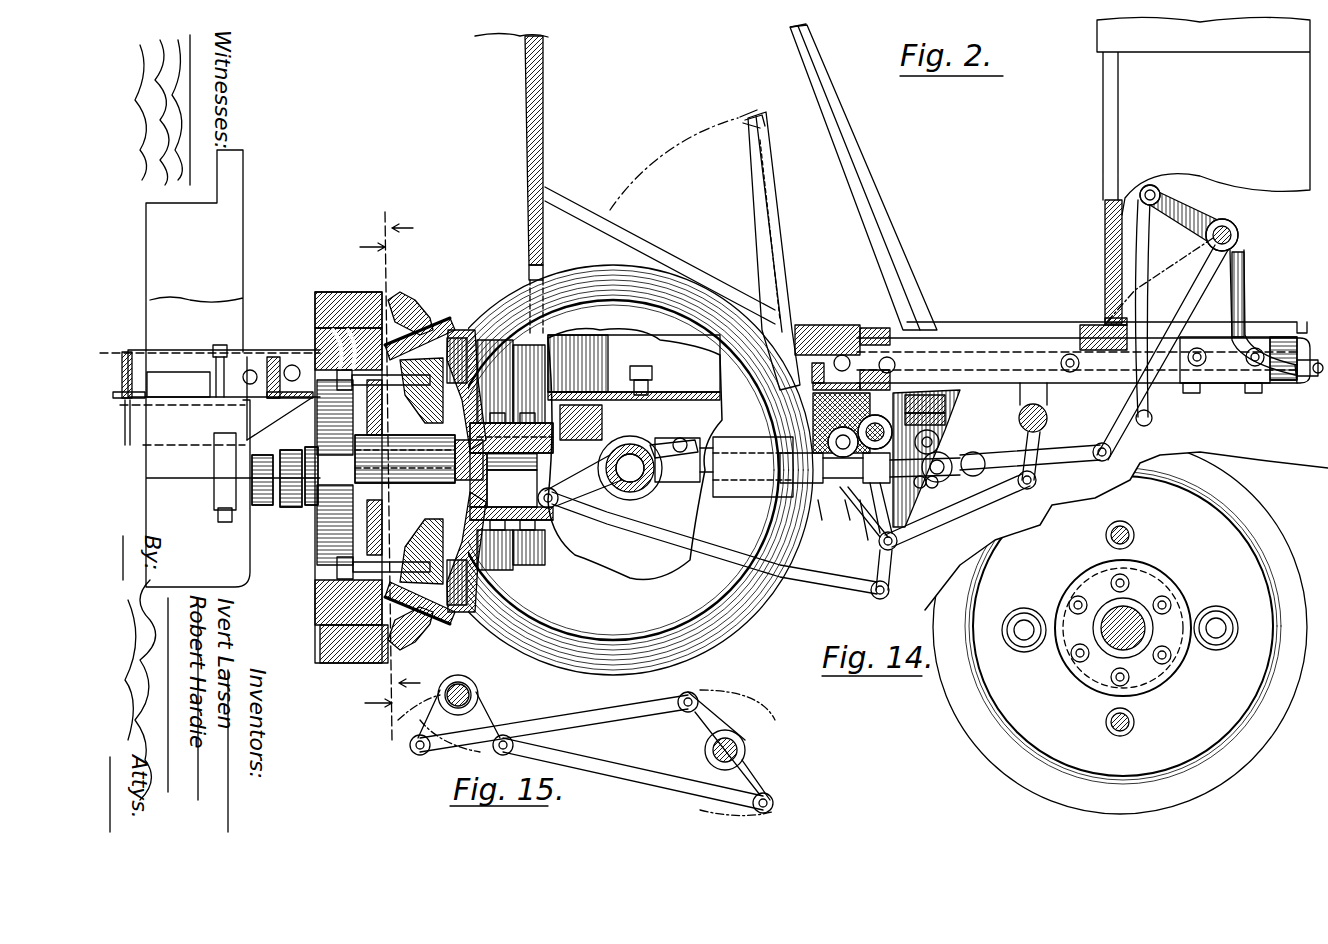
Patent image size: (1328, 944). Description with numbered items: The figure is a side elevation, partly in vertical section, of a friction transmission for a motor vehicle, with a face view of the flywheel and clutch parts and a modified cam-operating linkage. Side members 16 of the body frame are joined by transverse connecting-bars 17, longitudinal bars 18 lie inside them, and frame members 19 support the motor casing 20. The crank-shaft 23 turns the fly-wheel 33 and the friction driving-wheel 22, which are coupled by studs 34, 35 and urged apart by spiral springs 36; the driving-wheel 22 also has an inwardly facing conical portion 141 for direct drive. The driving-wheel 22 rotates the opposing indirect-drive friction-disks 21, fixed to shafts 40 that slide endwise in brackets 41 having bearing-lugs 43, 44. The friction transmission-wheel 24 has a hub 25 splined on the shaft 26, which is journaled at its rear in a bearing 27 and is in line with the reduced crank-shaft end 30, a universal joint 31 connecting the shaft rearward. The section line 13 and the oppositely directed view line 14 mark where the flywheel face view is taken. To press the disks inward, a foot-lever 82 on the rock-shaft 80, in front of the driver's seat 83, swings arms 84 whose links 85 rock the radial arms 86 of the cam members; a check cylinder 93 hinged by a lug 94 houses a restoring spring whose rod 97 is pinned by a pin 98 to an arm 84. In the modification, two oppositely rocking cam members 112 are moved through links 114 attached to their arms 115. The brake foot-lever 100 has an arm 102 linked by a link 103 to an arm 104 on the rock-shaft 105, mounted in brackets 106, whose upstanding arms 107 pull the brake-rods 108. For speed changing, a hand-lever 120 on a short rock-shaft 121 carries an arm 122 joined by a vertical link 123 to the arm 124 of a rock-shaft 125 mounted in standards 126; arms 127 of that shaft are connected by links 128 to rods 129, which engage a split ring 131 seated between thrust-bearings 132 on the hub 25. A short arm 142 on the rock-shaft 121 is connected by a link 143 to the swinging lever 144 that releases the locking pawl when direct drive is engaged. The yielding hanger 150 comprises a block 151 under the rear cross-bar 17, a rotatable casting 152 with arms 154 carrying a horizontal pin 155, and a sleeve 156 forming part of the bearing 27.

In FIG. 2, the section line 13 is at (388, 475).
In FIG. 2, the view line 14 is at (391, 476).
In FIG. 2, the side members 16 is at (265, 340).
In FIG. 2, the transverse connecting-bars 17 is at (292, 364).
In FIG. 2, the horizontal longitudinal bars 18 is at (835, 321).
In FIG. 2, the frame members 19 is at (280, 418).
In FIG. 2, the motor frame or casing 20 is at (233, 368).
In FIG. 2, the indirect-drive friction-disks 21 is at (613, 470).
In FIG. 2, the driving-wheel 22 is at (400, 300).
In FIG. 2, the crank-shaft 23 is at (405, 459).
In FIG. 14, the crank-shaft 23 is at (1135, 610).
In FIG. 2, the friction transmission-wheel 24 is at (478, 330).
In FIG. 2, the hub 25 is at (511, 532).
In FIG. 2, the shaft 26 is at (750, 432).
In FIG. 2, the bearing 27 is at (825, 518).
In FIG. 2, the rear reduced end of crank-shaft 30 is at (467, 460).
In FIG. 2, the universal joint 31 is at (298, 490).
In FIG. 2, the fly-wheel 33 is at (358, 292).
In FIG. 14, the fly-wheel 33 is at (1120, 627).
In FIG. 2, the stud 34 is at (305, 355).
In FIG. 14, the stud 34 is at (1135, 533).
In FIG. 2, the stud 35 is at (337, 568).
In FIG. 14, the stud 35 is at (1135, 721).
In FIG. 14, the spiral springs 36 is at (1220, 610).
In FIG. 2, the shafts 40 is at (645, 436).
In FIG. 2, the brackets 41 is at (628, 436).
In FIG. 2, the depending lug 43 is at (581, 421).
In FIG. 2, the depending lug 44 is at (645, 475).
In FIG. 15, the rock-shaft 80 is at (731, 753).
In FIG. 2, the foot-lever 82 is at (750, 228).
In FIG. 2, the driver's seat 83 is at (810, 370).
In FIG. 2, the rigid arms 84 is at (890, 541).
In FIG. 2, the links 85 is at (1095, 128).
In FIG. 2, the radial arms 86 is at (590, 470).
In FIG. 2, the cylinder 93 is at (690, 440).
In FIG. 2, the lug 94 is at (680, 438).
In FIG. 2, the rod 97 is at (848, 518).
In FIG. 2, the bolt or pin 98 is at (852, 525).
In FIG. 2, the brake foot-lever 100 is at (712, 250).
In FIG. 2, the arm 102 is at (926, 458).
In FIG. 2, the link 103 is at (954, 512).
In FIG. 2, the arm 104 is at (1035, 485).
In FIG. 2, the rock-shaft 105 is at (1058, 440).
In FIG. 2, the brackets 106 is at (1017, 407).
In FIG. 2, the fixed arms 107 is at (1070, 322).
In FIG. 2, the brake-rods 108 is at (1305, 378).
In FIG. 15, the rocking cam members 112 is at (475, 700).
In FIG. 15, the links 114 is at (656, 780).
In FIG. 15, the arms 115 is at (765, 790).
In FIG. 2, the hand-lever 120 is at (445, 330).
In FIG. 2, the short rock-shaft 121 is at (938, 476).
In FIG. 2, the rigid arm 122 is at (1078, 440).
In FIG. 2, the vertical link 123 is at (1105, 258).
In FIG. 2, the arm 124 is at (1195, 205).
In FIG. 2, the rock-shaft 125 is at (1232, 228).
In FIG. 2, the standards 126 is at (1248, 300).
In FIG. 2, the rigid arms 127 is at (1160, 380).
In FIG. 2, the links 128 is at (1102, 462).
In FIG. 2, the parallel rods 129 is at (855, 512).
In FIG. 2, the split ring 131 is at (515, 412).
In FIG. 2, the antifriction thrust-bearings 132 is at (511, 455).
In FIG. 2, the complemental conical portion 141 is at (432, 310).
In FIG. 2, the short rigid arm 142 is at (940, 491).
In FIG. 2, the link 143 is at (914, 491).
In FIG. 2, the vertically-swinging lever 144 is at (933, 433).
In FIG. 2, the hanger 150 is at (801, 467).
In FIG. 2, the block 151 is at (920, 383).
In FIG. 2, the casting 152 is at (918, 399).
In FIG. 2, the integral arms 154 is at (925, 411).
In FIG. 2, the horizontal pin 155 is at (843, 465).
In FIG. 2, the sleeve 156 is at (879, 468).